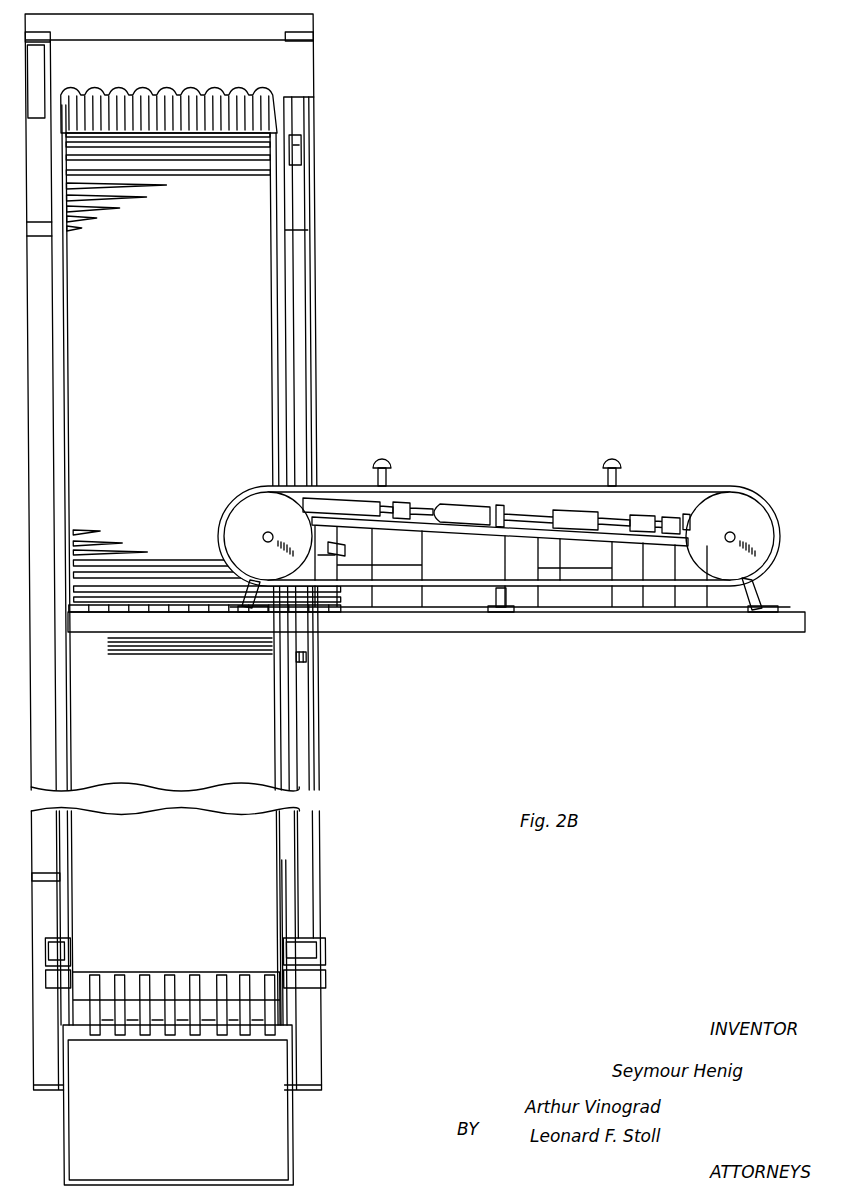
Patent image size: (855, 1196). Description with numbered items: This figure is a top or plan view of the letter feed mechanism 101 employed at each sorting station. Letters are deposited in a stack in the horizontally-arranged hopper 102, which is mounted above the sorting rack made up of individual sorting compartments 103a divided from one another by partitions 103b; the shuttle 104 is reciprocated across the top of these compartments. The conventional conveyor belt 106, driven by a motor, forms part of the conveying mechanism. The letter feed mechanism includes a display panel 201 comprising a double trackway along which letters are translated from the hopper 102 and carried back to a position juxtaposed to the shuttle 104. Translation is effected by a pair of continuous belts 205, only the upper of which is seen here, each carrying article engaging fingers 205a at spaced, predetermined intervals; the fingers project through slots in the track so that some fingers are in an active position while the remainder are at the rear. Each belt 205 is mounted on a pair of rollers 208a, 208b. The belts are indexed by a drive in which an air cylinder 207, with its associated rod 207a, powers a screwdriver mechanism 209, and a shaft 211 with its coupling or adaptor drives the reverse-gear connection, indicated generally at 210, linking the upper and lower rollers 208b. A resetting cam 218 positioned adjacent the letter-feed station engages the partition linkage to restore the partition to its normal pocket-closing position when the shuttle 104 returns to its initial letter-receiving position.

The conveyor transfer assembly 101 is at (616, 647).
The hopper 102 is at (161, 693).
The sorting compartments 103a is at (214, 172).
The partitions 103b is at (198, 178).
The shuttle 104 is at (277, 864).
The conveyor belt 106 is at (212, 92).
The display panel 201 is at (730, 633).
The continuous belts 205 is at (548, 487).
The article engaging fingers 205a is at (392, 458).
The air cylinder 207 is at (340, 497).
The piston rod coupling 207a is at (413, 496).
The roller 208a is at (290, 518).
The roller 208b is at (750, 518).
The screwdriver mechanism 209 is at (518, 506).
The stop member 210 is at (683, 510).
The shaft and coupling 211 is at (680, 525).
The resetting cam 218 is at (301, 656).